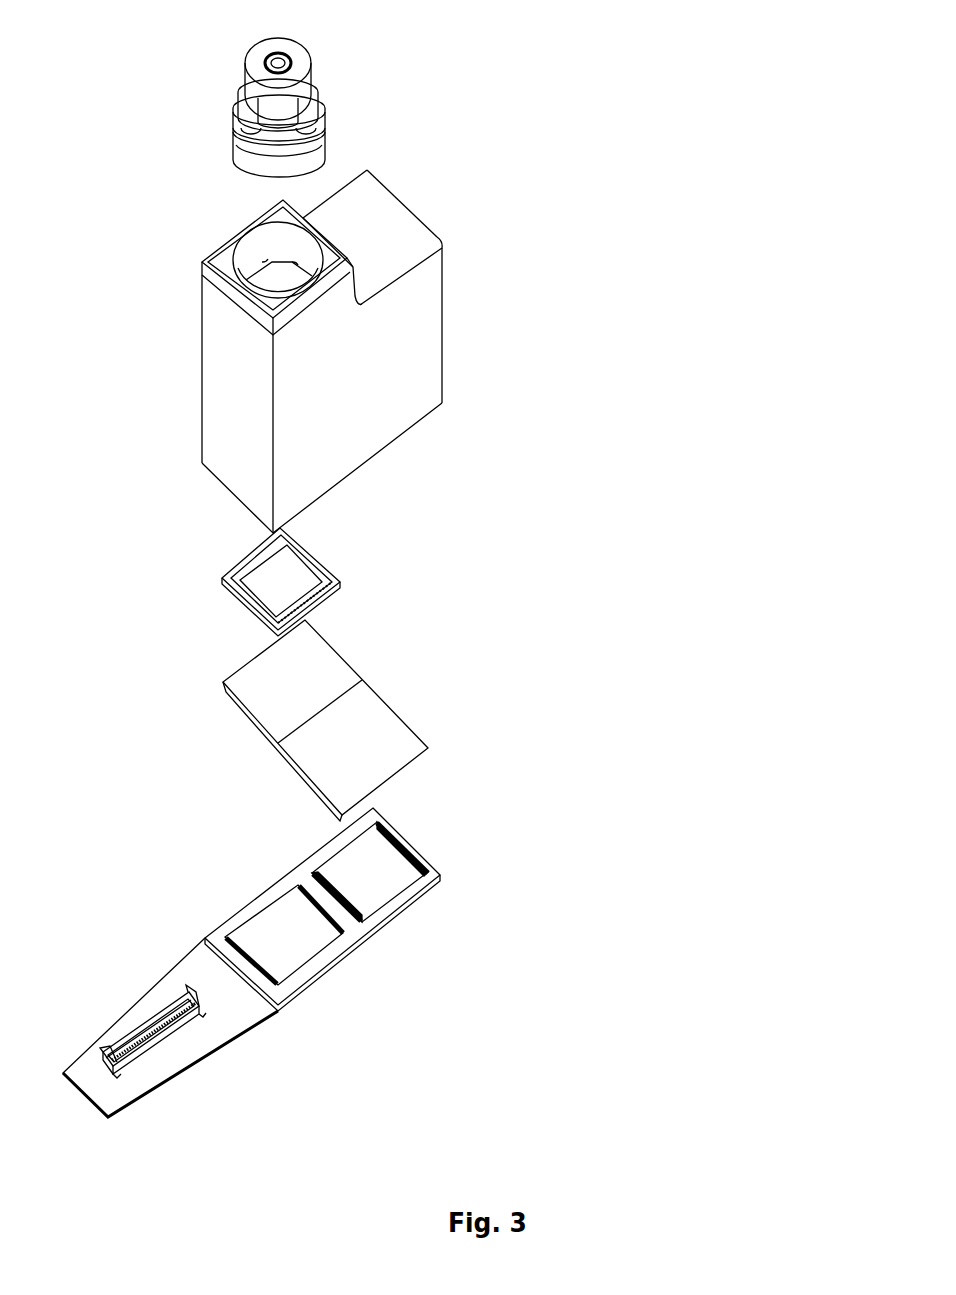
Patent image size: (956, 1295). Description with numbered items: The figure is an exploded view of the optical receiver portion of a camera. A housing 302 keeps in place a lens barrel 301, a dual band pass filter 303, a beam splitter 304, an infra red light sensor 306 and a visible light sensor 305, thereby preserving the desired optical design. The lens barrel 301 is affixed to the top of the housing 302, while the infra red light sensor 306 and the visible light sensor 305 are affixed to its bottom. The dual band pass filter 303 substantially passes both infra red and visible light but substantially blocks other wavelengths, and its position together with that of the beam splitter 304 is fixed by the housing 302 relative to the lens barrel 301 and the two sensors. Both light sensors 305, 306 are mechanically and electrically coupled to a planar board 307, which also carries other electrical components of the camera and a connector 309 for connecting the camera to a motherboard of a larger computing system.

The lens barrel 301 is at (327, 112).
The housing 302 is at (443, 277).
The dual band pass filter 303 is at (343, 572).
The beam splitter 304 is at (408, 720).
The visible light sensor 305 is at (410, 890).
The infra red light sensor 306 is at (307, 962).
The planar board 307 is at (438, 868).
The connector 309 is at (178, 1042).